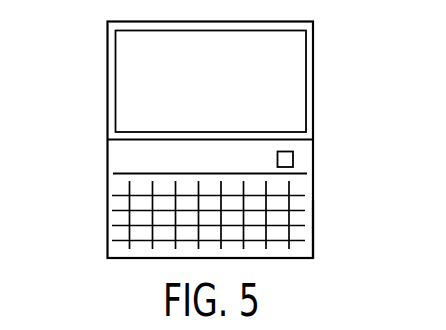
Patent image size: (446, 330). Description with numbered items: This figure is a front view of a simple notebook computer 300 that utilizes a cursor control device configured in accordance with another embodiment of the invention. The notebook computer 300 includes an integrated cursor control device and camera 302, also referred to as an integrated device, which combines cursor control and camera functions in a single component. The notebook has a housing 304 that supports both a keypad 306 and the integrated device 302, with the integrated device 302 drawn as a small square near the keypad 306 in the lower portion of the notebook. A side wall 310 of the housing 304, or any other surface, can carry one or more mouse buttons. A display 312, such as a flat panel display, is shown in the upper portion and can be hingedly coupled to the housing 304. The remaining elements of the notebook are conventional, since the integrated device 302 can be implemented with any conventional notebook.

The notebook computer 300 is at (410, 92).
The integrated cursor control device and camera 302 is at (293, 154).
The housing 304 is at (107, 157).
The keypad 306 is at (290, 217).
The side wall 310 is at (313, 243).
The display 312 is at (222, 82).